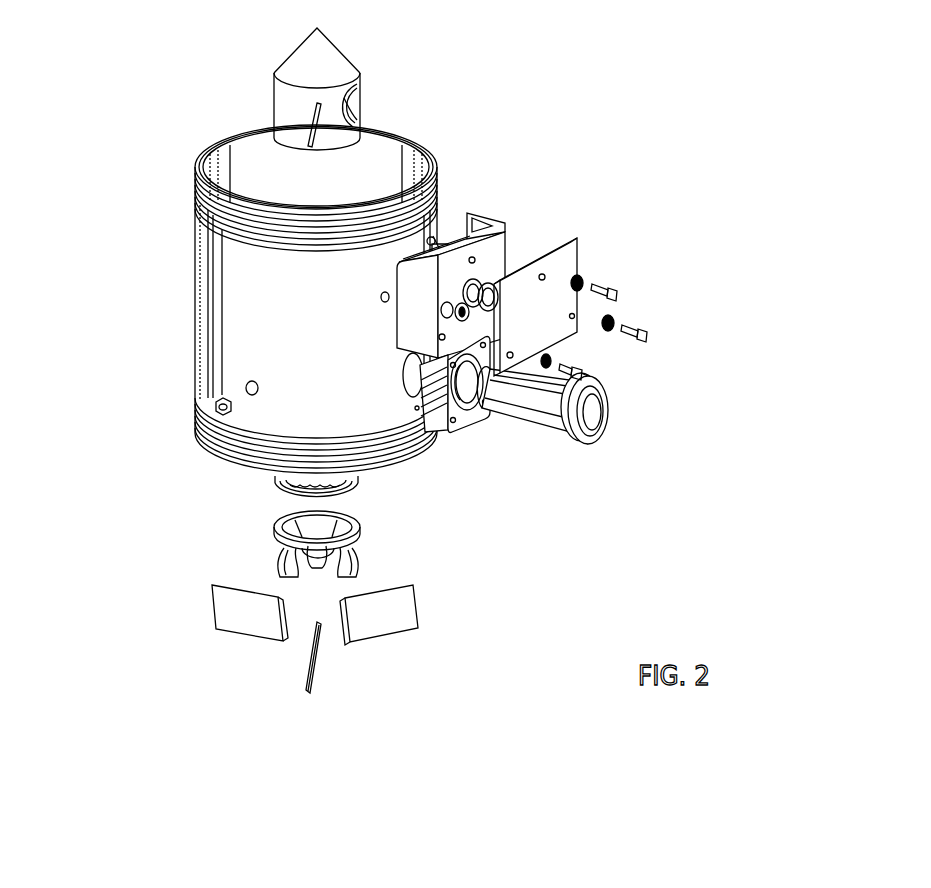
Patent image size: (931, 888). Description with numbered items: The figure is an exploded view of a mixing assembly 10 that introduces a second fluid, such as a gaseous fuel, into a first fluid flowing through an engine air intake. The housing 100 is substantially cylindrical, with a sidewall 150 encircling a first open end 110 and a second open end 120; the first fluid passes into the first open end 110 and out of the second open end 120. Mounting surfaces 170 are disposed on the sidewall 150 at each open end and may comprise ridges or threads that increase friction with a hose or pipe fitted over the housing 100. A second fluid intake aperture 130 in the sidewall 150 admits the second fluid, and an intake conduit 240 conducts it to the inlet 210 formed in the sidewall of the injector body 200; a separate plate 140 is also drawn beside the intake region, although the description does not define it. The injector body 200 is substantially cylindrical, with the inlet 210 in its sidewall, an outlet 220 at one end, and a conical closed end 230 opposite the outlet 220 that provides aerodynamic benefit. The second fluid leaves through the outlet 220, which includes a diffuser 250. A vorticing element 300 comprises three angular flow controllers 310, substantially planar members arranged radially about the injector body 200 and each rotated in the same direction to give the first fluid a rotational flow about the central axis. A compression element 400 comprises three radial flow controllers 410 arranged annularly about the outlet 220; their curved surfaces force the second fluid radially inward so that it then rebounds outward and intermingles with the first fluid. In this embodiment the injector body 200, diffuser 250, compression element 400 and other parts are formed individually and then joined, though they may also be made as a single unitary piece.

The mixing assembly 10 is at (648, 82).
The housing 100 is at (215, 290).
The first open end 110 is at (243, 166).
The second open end 120 is at (406, 479).
The second fluid intake aperture 130 is at (632, 421).
The cover plate 140 is at (553, 206).
The sidewall 150 is at (186, 328).
The mounting surfaces 170 is at (438, 193).
The injector body 200 is at (288, 107).
The inlet 210 is at (354, 105).
The outlet 220 is at (344, 159).
The conical closed end 230 is at (308, 58).
The intake conduit 240 is at (545, 415).
The diffuser 250 is at (292, 490).
The vorticing element 300 is at (383, 683).
The angular flow controllers 310 is at (240, 613).
The compression element 400 is at (278, 538).
The radial flow controllers 410 is at (307, 530).